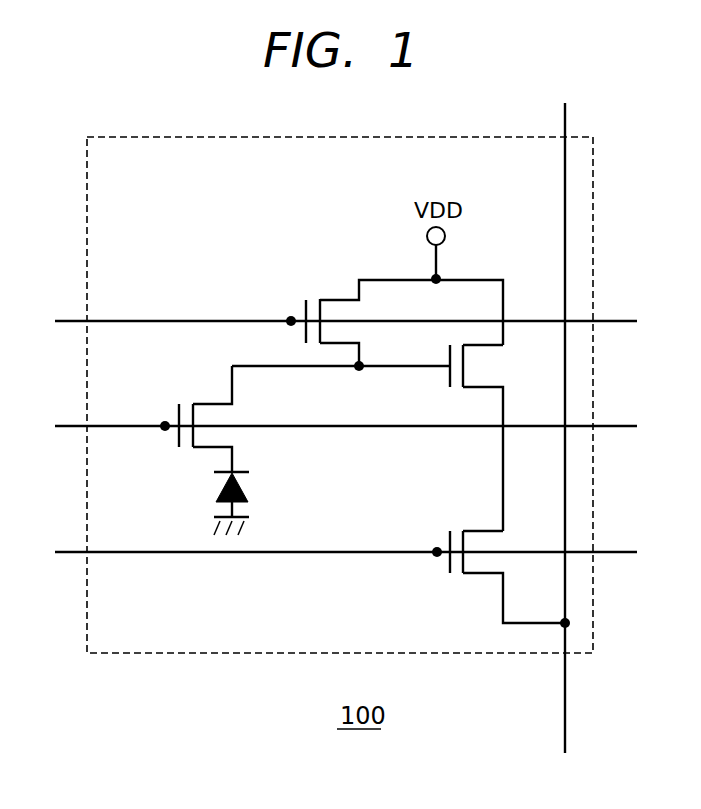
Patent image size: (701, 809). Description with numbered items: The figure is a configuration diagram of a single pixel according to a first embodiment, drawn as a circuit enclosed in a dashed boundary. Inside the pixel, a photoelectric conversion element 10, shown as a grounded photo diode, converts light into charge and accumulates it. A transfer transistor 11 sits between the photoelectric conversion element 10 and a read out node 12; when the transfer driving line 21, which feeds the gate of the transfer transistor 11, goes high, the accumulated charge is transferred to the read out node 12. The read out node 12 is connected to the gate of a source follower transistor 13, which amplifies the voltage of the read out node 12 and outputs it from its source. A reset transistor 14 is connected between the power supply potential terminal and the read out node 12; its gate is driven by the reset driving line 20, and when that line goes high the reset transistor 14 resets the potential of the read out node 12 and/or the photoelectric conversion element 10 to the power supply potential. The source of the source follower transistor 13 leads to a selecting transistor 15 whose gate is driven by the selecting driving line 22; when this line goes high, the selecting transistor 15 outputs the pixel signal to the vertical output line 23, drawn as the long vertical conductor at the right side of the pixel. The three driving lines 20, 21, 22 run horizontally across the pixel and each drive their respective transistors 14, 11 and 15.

The photoelectric conversion element 10 is at (215, 487).
The transfer transistor 11 is at (186, 403).
The read out node 12 is at (278, 369).
The source follower transistor 13 is at (460, 390).
The reset transistor 14 is at (313, 299).
The selecting transistor 15 is at (458, 576).
The reset driving line 20 is at (67, 320).
The transfer driving line 21 is at (67, 425).
The selecting driving line 22 is at (67, 551).
The vertical output line 23 is at (566, 113).